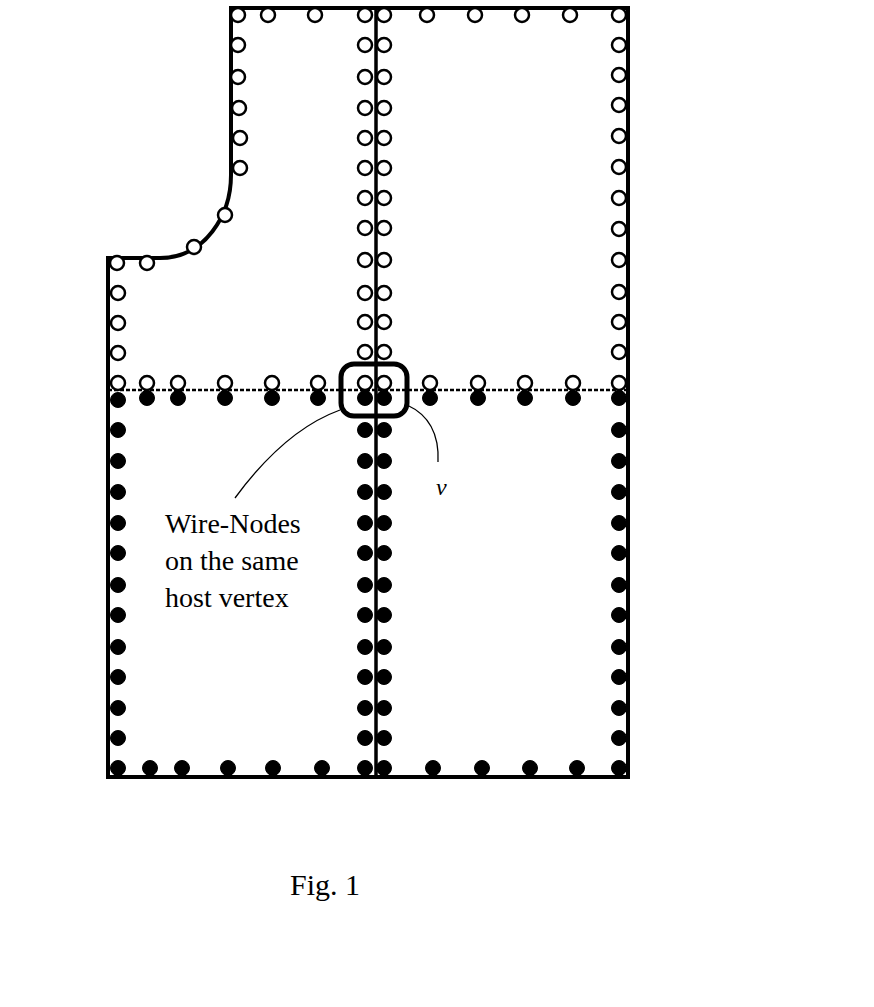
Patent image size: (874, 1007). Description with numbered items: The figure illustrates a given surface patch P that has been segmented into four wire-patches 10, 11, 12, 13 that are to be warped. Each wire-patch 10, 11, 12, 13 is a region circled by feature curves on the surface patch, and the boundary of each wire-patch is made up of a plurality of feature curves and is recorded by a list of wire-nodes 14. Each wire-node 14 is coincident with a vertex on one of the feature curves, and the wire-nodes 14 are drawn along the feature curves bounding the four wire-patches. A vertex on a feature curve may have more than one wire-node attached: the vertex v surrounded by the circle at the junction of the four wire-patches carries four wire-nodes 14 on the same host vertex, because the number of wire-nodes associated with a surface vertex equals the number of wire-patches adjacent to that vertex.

The wire-patch 10 is at (230, 258).
The wire-patch 11 is at (578, 187).
The wire-patch 12 is at (147, 692).
The wire-patch 13 is at (573, 662).
The wire-nodes 14 is at (387, 353).